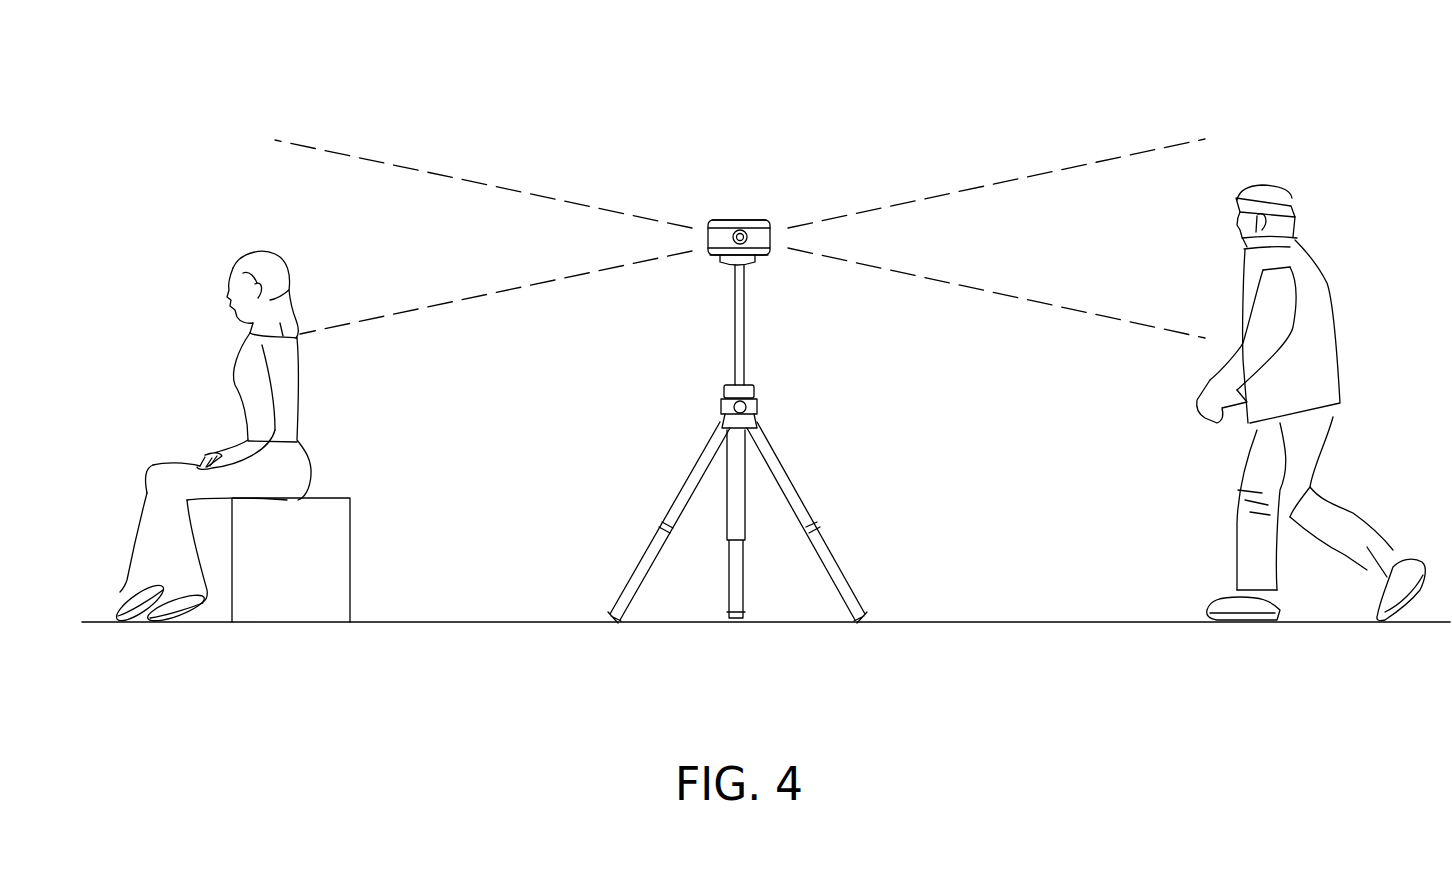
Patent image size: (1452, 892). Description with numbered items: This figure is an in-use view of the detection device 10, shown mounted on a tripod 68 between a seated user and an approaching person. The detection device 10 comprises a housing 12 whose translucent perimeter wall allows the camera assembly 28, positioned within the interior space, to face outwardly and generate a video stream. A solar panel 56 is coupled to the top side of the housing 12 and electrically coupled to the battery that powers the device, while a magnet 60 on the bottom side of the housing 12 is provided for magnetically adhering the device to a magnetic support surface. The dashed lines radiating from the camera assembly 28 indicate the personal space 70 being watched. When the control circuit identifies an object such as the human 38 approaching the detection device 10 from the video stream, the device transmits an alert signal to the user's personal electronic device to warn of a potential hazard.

The detection device 10 is at (799, 181).
The housing 12 is at (697, 257).
The camera assembly 28 is at (757, 237).
The human 38 is at (1313, 288).
The solar panel 56 is at (735, 220).
The magnet 60 is at (711, 258).
The tripod 68 is at (690, 482).
The personal space 70 is at (390, 214).